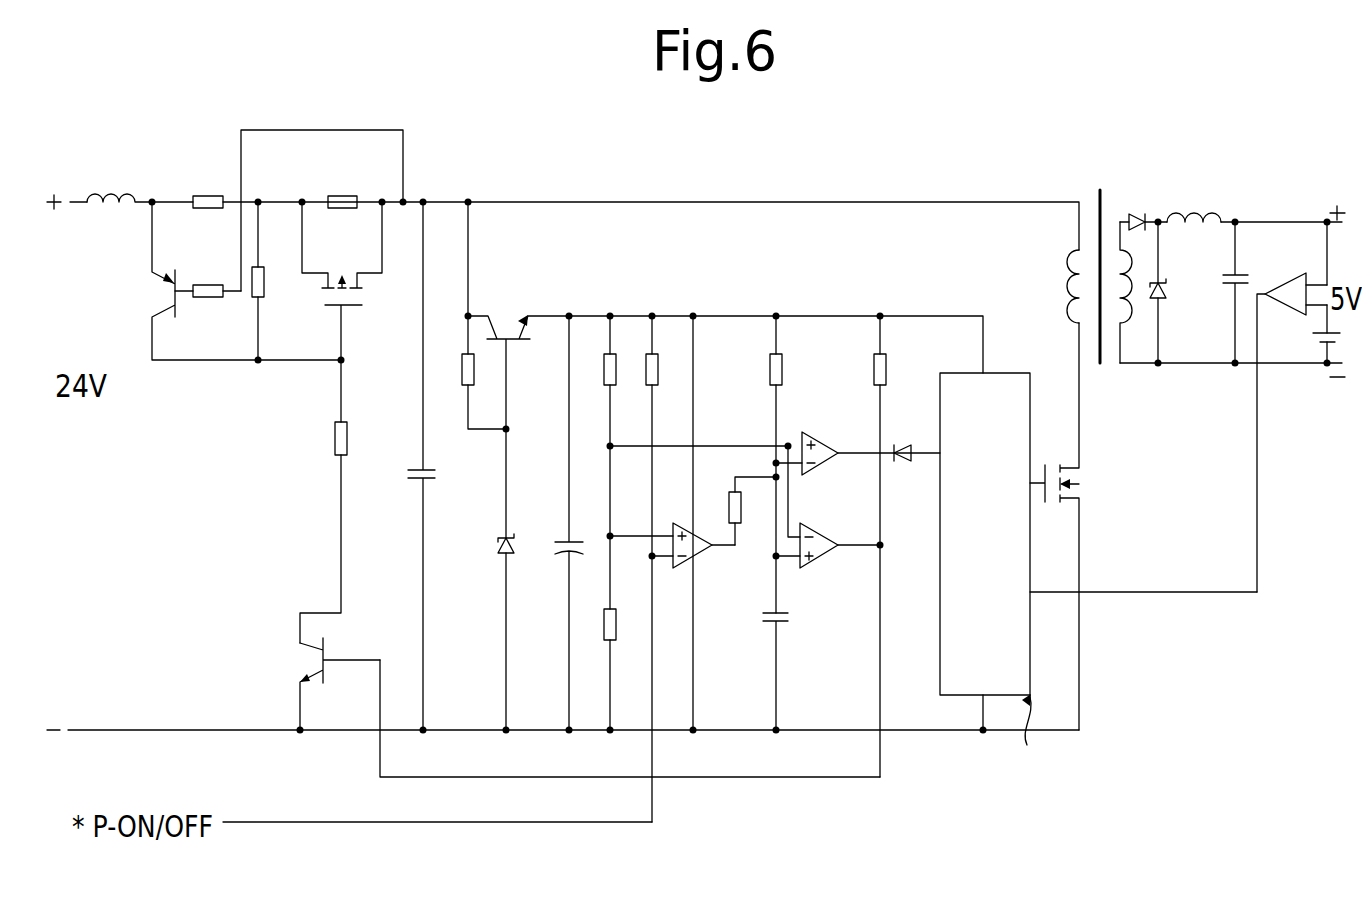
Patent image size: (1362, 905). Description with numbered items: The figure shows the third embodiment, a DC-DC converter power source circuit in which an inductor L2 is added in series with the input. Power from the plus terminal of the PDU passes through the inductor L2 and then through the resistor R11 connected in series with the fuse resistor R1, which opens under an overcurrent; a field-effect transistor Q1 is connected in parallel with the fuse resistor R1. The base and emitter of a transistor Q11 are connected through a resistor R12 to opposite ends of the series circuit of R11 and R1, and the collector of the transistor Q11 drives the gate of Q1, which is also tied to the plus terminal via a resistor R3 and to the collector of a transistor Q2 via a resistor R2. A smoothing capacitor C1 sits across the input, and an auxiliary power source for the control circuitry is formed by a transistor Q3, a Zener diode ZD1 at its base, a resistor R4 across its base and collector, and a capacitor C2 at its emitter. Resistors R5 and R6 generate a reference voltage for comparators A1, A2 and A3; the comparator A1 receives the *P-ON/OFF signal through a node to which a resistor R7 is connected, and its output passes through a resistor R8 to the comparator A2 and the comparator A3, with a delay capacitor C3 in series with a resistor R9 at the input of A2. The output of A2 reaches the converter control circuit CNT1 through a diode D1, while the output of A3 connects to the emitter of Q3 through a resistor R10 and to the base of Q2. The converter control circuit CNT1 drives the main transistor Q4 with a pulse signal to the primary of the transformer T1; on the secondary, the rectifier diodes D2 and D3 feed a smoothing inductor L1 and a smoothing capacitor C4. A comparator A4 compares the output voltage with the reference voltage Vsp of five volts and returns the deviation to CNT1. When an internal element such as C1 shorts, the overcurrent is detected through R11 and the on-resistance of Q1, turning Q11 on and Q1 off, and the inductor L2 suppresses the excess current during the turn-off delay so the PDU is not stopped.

The inductor L2 is at (124, 194).
The resistor R11 is at (205, 195).
The fuse resistor R1 is at (343, 195).
The resistor R12 is at (212, 284).
The transistor Q11 is at (165, 292).
The resistor R3 is at (265, 280).
The field-effect transistor Q1 is at (366, 292).
The resistor R2 is at (334, 440).
The transistor Q2 is at (305, 660).
The smoothing capacitor C1 is at (407, 474).
The resistor R4 is at (462, 370).
The transistor Q3 is at (504, 318).
The Zener diode ZD1 is at (497, 547).
The capacitor C2 is at (556, 546).
The resistor R5 is at (616, 370).
The resistor R6 is at (602, 625).
The resistor R7 is at (658, 370).
The comparator A1 is at (686, 566).
The resistor R8 is at (741, 512).
The resistor R9 is at (770, 370).
The comparator A2 is at (826, 446).
The resistor R10 is at (874, 372).
The diode D1 is at (902, 462).
The comparator A3 is at (818, 562).
The delay capacitor C3 is at (790, 616).
The converter control circuit CNT1 is at (1003, 373).
The main transistor Q4 is at (1083, 484).
The transformer T1 is at (1100, 214).
The rectifier diode D2 is at (1135, 212).
The smoothing inductor L1 is at (1213, 214).
The rectifier diode D3 is at (1168, 286).
The smoothing capacitor C4 is at (1222, 280).
The comparator A4 is at (1275, 289).
The reference voltage Vsp is at (1313, 338).